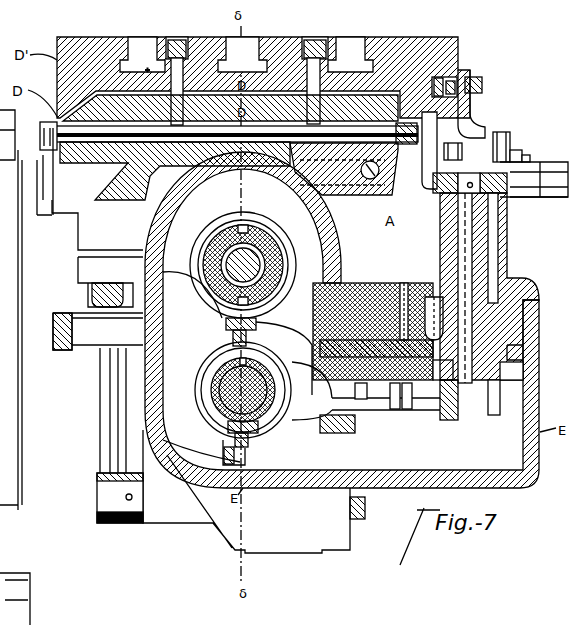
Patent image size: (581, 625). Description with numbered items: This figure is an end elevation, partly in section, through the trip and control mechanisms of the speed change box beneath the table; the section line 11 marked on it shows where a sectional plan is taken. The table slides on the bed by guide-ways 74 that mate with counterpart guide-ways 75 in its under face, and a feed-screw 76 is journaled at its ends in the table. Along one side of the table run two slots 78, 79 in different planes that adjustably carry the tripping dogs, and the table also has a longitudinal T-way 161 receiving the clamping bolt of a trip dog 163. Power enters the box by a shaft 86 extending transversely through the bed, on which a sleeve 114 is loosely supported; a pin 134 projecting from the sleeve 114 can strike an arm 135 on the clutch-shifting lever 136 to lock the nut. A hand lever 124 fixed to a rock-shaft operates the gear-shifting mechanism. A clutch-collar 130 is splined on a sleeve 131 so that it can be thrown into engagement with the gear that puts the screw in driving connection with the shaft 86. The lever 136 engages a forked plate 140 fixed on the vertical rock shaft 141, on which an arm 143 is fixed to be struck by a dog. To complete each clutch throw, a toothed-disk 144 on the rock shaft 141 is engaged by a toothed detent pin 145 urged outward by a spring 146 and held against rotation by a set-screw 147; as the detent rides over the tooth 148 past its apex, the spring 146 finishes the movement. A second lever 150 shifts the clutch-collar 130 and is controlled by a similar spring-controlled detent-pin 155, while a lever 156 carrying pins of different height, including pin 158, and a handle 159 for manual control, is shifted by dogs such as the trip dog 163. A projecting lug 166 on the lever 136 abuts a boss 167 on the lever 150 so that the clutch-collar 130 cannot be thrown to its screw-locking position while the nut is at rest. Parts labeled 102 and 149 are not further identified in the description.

The housing 11 is at (190, 300).
The guide-ways 74 is at (115, 168).
The counterpart guide-ways 75 is at (128, 163).
The feed-screw 76 is at (272, 252).
The slot 78 is at (396, 133).
The slot 79 is at (433, 84).
The shaft 86 is at (226, 397).
The block 102 is at (458, 60).
The sleeve 114 is at (217, 360).
The hand lever 124 is at (100, 429).
The clutch-collar 130 is at (283, 257).
The sleeve 131 is at (283, 268).
The pin 134 is at (250, 440).
The arm 135 is at (228, 435).
The lever 136 is at (396, 420).
The forked plate 140 is at (493, 404).
The rock shaft 141 is at (505, 281).
The arm 143 is at (455, 175).
The toothed-disk 144 is at (524, 348).
The toothed detent pin 145 is at (511, 371).
The spring 146 is at (322, 342).
The set-screw 147 is at (403, 296).
The tooth 148 is at (443, 370).
The pipe 149 is at (535, 195).
The lever 150 is at (370, 414).
The spring controlled detent-pin 155 is at (408, 292).
The lever 156 is at (523, 163).
The pin 158 is at (516, 150).
The handle 159 is at (550, 163).
The T-way 161 is at (446, 148).
The trip dog 163 is at (478, 128).
The projecting lug 166 is at (405, 412).
The boss 167 is at (382, 393).